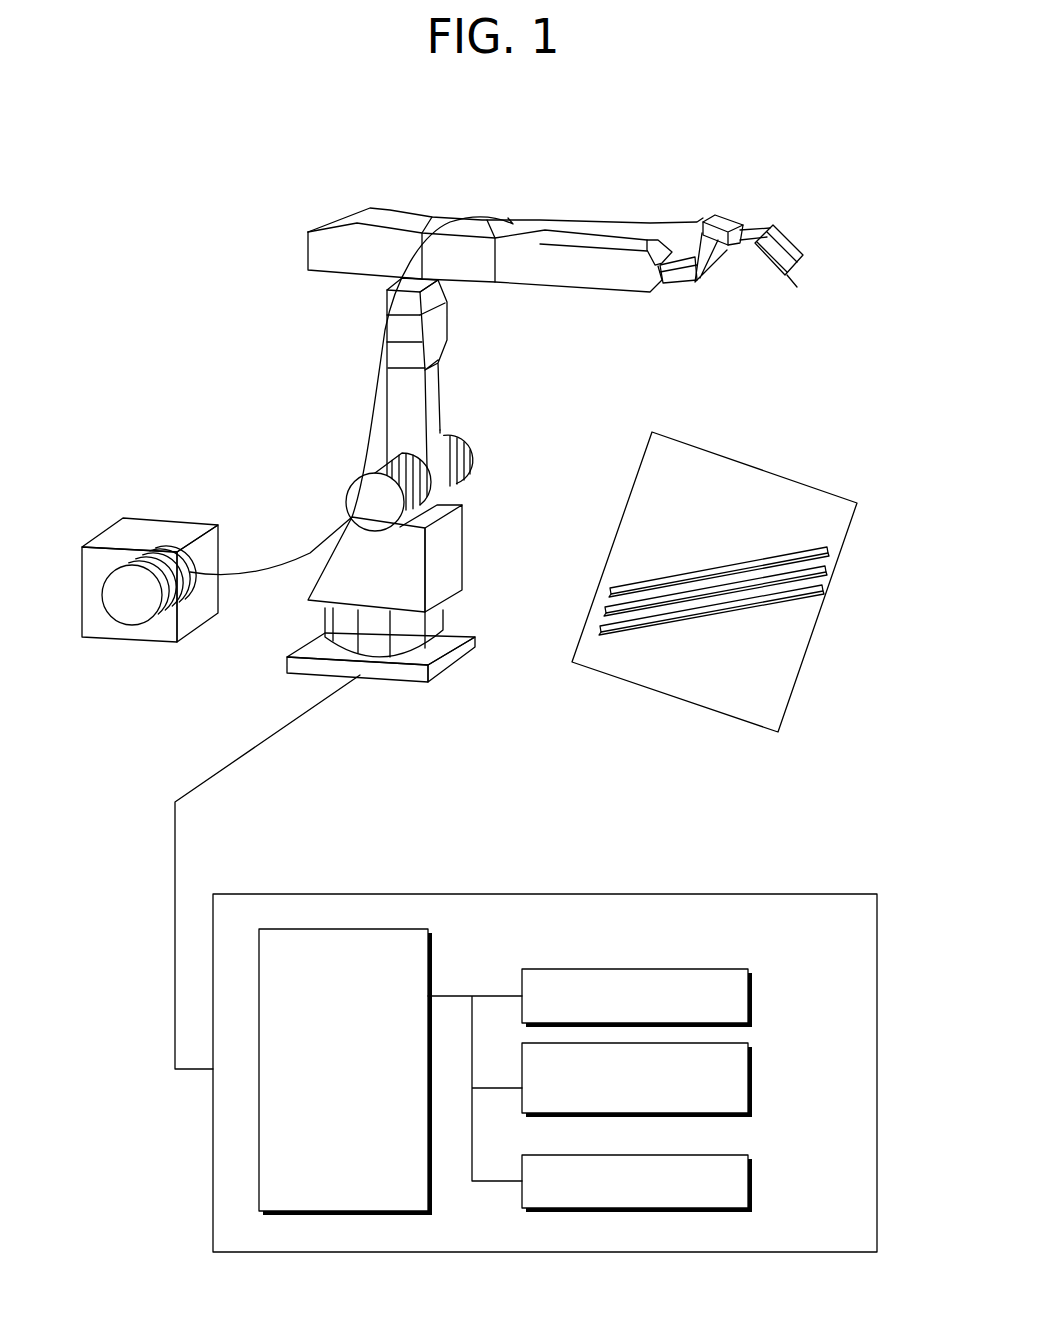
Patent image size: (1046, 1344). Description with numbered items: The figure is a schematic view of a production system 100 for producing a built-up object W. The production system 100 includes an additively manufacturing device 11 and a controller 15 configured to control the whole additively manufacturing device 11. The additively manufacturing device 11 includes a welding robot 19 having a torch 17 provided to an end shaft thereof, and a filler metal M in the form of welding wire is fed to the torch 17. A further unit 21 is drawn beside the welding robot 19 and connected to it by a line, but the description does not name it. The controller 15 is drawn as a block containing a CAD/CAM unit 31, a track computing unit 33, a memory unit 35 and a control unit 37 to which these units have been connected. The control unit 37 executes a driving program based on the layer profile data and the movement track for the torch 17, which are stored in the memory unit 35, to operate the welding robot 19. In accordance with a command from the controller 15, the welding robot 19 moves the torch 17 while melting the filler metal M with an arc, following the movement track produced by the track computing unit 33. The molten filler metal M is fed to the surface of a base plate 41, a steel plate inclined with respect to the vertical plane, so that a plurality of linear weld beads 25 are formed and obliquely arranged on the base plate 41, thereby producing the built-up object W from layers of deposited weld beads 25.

The production system 100 is at (833, 174).
The additively manufacturing device 11 is at (323, 180).
The welding robot 19 is at (403, 238).
The filler metal M is at (650, 224).
The torch 17 is at (790, 282).
The camera 21 is at (162, 517).
The built-up object W is at (772, 532).
The base plate 41 is at (777, 662).
The weld beads 25 is at (822, 587).
The controller 15 is at (770, 876).
The control unit 37 is at (430, 951).
The CAD/CAM unit 31 is at (752, 998).
The track computing unit 33 is at (752, 1084).
The memory unit 35 is at (752, 1180).